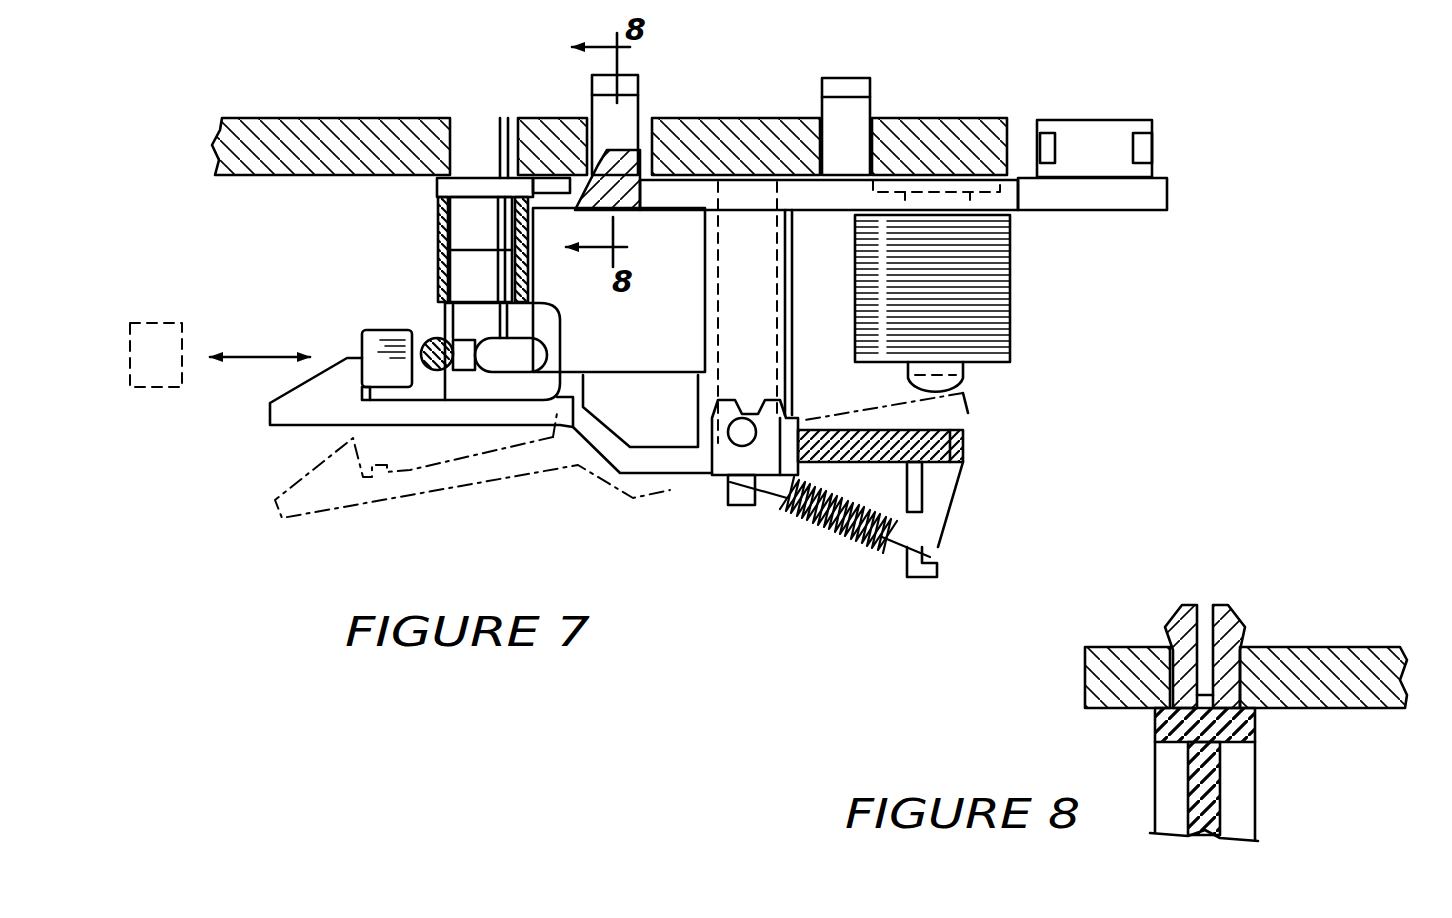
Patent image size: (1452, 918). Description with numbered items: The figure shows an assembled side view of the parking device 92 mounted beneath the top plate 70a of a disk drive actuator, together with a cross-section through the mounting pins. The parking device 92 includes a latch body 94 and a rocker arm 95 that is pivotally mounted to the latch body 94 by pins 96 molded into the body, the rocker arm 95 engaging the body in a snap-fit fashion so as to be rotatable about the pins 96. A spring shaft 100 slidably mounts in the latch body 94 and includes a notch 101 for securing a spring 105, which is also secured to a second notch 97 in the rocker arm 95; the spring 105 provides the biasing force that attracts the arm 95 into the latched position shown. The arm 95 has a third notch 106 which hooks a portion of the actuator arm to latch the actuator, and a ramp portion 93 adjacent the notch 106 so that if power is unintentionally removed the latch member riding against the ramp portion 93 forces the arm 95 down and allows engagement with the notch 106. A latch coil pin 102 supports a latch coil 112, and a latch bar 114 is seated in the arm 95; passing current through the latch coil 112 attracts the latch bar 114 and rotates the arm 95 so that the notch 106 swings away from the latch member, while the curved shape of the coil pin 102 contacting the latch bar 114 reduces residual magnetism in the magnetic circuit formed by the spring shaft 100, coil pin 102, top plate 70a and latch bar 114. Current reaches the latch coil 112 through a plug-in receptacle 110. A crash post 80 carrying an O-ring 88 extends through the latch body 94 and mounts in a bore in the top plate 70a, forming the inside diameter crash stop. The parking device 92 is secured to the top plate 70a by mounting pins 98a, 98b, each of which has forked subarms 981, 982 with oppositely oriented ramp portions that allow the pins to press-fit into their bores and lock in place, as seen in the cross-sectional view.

In FIG. 7, the top plate 70a is at (322, 152).
In FIG. 8, the top plate 70a is at (1318, 653).
In FIG. 7, the crash post 80 is at (468, 222).
In FIG. 7, the O-ring 88 is at (437, 340).
In FIG. 7, the parking device 92 is at (1040, 350).
In FIG. 7, the ramp portion 93 is at (283, 410).
In FIG. 7, the latch body 94 is at (682, 205).
In FIG. 8, the latch body 94 is at (1243, 787).
In FIG. 7, the rocker arm 95 is at (678, 465).
In FIG. 7, the pins 96 is at (736, 430).
In FIG. 7, the second notch 97 is at (930, 555).
In FIG. 7, the mounting pin 98a is at (640, 110).
In FIG. 7, the mounting pin 98b is at (858, 108).
In FIG. 8, the forked subarm 981 is at (1176, 612).
In FIG. 8, the forked subarm 982 is at (1237, 627).
In FIG. 7, the spring shaft 100 is at (737, 297).
In FIG. 7, the notch 101 is at (730, 487).
In FIG. 7, the latch coil pin 102 is at (967, 390).
In FIG. 7, the spring 105 is at (860, 557).
In FIG. 7, the third notch 106 is at (360, 372).
In FIG. 7, the plug-in receptacle 110 is at (1092, 135).
In FIG. 7, the latch coil 112 is at (1010, 280).
In FIG. 7, the latch bar 114 is at (935, 436).